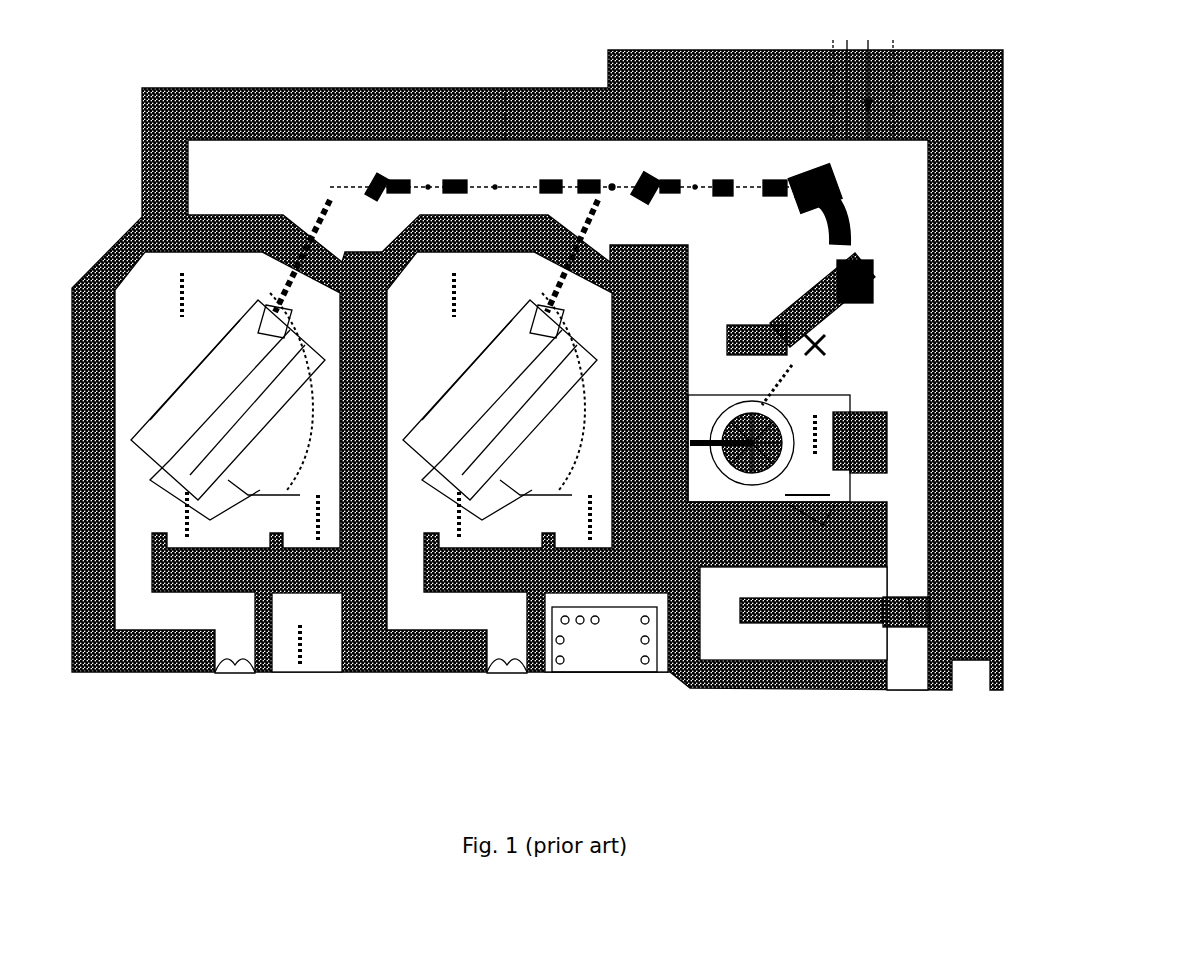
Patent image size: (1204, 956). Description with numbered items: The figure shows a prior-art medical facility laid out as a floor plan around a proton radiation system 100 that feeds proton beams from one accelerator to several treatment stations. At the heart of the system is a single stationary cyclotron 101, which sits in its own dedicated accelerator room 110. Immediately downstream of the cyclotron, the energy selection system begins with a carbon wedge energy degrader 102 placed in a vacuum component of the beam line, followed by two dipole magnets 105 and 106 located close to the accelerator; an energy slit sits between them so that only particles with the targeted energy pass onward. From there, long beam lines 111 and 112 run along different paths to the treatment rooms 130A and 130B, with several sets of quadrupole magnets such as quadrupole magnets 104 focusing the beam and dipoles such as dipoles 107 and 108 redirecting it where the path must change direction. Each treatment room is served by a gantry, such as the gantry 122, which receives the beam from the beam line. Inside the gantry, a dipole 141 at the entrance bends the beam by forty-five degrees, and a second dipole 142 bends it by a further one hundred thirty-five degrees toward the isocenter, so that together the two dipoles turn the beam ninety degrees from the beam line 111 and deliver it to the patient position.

The proton radiation system 100 is at (1157, 177).
The stationary cyclotron 101 is at (787, 435).
The carbon wedge energy degrader 102 is at (818, 352).
The quadrupole magnets 104 is at (702, 145).
The dipole magnet 105 is at (846, 296).
The dipole magnet 106 is at (842, 204).
The dipole 107 is at (650, 175).
The dipole 108 is at (589, 169).
The accelerator room 110 is at (837, 510).
The beam line 111 is at (820, 118).
The beam line 112 is at (575, 156).
The gantry 122 is at (239, 360).
The treatment room A 130A is at (446, 338).
The treatment room B 130B is at (176, 345).
The dipole 141 is at (527, 320).
The dipole 142 is at (573, 463).